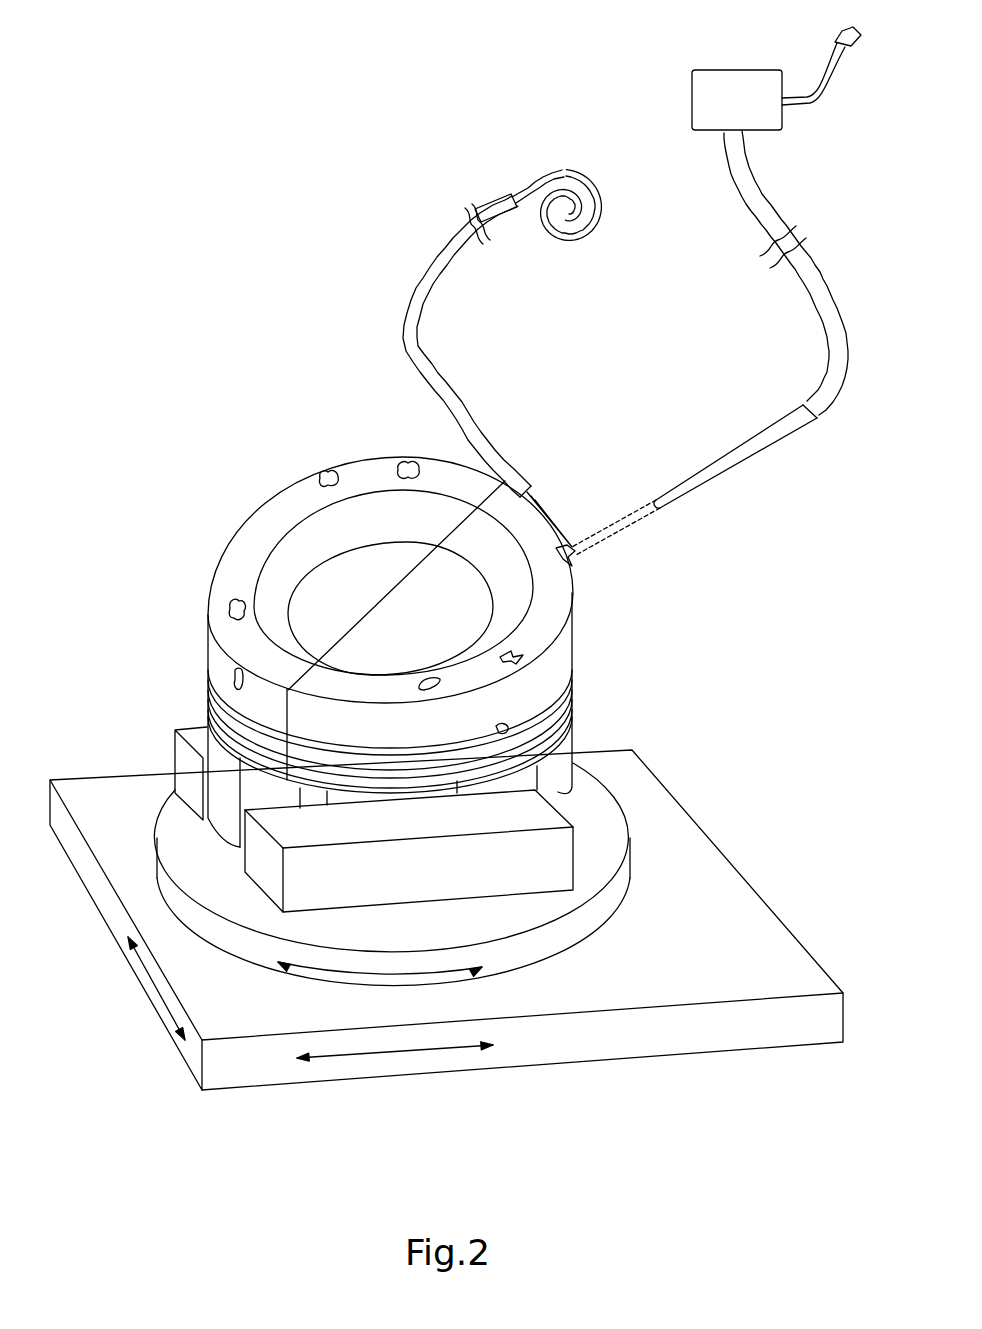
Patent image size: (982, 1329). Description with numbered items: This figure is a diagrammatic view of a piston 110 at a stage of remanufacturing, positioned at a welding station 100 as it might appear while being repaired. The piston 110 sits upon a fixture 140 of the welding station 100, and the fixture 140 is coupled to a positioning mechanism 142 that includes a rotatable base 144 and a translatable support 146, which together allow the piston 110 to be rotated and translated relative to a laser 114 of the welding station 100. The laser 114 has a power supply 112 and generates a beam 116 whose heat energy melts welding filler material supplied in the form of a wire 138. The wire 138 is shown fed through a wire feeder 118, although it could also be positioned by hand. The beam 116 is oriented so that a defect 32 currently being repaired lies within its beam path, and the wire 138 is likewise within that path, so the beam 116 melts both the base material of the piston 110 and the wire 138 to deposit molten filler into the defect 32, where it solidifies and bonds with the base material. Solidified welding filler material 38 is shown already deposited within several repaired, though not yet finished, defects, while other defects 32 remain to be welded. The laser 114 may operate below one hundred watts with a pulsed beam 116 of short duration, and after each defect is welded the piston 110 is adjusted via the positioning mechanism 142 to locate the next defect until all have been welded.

The welding station 100 is at (226, 163).
The piston 110 is at (178, 594).
The solidified welding filler material 38 is at (320, 470).
The defect 32 is at (527, 640).
The power supply 112 is at (738, 70).
The laser 114 is at (685, 477).
The beam 116 is at (625, 535).
The wire feeder 118 is at (478, 428).
The wire 138 is at (553, 510).
The fixture 140 is at (577, 845).
The positioning mechanism 142 is at (665, 915).
The rotatable base 144 is at (568, 937).
The translatable support 146 is at (652, 1032).